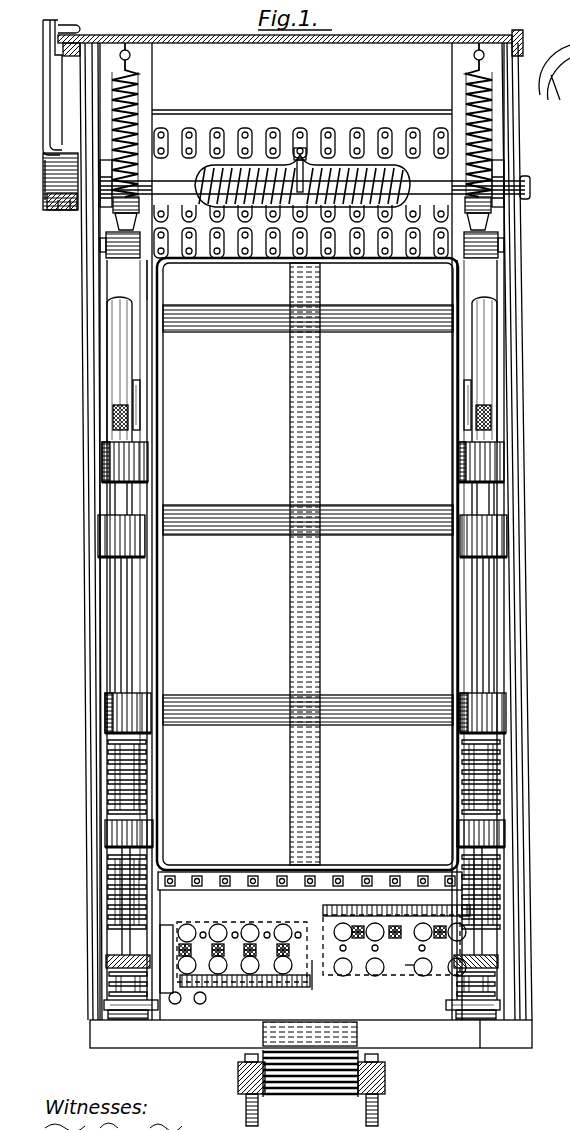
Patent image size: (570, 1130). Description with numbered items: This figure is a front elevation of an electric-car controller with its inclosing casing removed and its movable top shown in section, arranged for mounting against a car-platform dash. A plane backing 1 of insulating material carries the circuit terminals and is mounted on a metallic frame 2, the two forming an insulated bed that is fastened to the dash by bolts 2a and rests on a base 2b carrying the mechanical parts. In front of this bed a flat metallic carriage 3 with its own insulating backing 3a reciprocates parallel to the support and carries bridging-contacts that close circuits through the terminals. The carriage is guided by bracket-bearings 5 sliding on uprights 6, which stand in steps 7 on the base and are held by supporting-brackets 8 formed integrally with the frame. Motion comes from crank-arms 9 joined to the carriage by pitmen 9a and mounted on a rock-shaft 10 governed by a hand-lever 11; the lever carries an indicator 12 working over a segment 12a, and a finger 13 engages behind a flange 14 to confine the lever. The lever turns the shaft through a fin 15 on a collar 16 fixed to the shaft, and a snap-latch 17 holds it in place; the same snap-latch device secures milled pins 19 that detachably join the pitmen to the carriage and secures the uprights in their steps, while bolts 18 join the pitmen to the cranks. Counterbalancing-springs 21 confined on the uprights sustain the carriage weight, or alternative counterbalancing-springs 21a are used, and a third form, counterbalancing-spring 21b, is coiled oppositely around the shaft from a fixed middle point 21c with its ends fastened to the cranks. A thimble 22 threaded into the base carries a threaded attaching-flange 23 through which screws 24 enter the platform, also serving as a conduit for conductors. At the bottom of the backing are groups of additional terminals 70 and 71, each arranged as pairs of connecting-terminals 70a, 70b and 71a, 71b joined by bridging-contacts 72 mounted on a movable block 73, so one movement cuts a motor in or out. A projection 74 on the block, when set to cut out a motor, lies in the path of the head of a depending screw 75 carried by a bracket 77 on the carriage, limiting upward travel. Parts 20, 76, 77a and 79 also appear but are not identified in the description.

The plane backing 1 is at (277, 118).
The metallic frame 2 is at (52, 206).
The bolts 2a is at (490, 1030).
The base 2b is at (311, 1034).
The carriage 3 is at (150, 620).
The backing 3a is at (307, 564).
The bracket-bearings 5 is at (112, 458).
The uprights 6 is at (118, 340).
The steps 7 is at (108, 1010).
The supporting-brackets 8 is at (120, 535).
The crank-arms 9 is at (486, 205).
The pitmen 9a is at (140, 272).
The rock-shaft 10 is at (528, 186).
The hand-lever 11 is at (44, 113).
The indicator 12 is at (74, 31).
The segment 12a is at (108, 34).
The finger 13 is at (58, 29).
The flange 14 is at (62, 50).
The fin 15 is at (62, 211).
The collar 16 is at (73, 212).
The snap-latch 17 is at (55, 183).
The bolts 18 is at (496, 243).
The milled pins 19 is at (120, 416).
The washer 20 is at (108, 1020).
The counterbalancing-springs 21 is at (110, 776).
The counterbalancing-springs 21a is at (135, 92).
The counterbalancing-spring 21b is at (230, 165).
The middle point 21c is at (306, 156).
The thimble 22 is at (305, 1098).
The attaching-flange 23 is at (238, 1081).
The screws 24 is at (246, 1119).
The terminals 70 is at (220, 938).
The connecting-terminal 70a is at (183, 976).
The connecting-terminal 70b is at (190, 924).
The terminals 71 is at (346, 970).
The connecting-terminal 71a is at (376, 977).
The connecting-terminal 71b is at (368, 915).
The bridging-contact 72 is at (268, 945).
The block 73 is at (388, 912).
The projection 74 is at (133, 928).
The depending screw 75 is at (110, 962).
The rod 76 is at (130, 940).
The bracket 77 is at (115, 830).
The pin 77a is at (330, 986).
The pin 79 is at (410, 970).